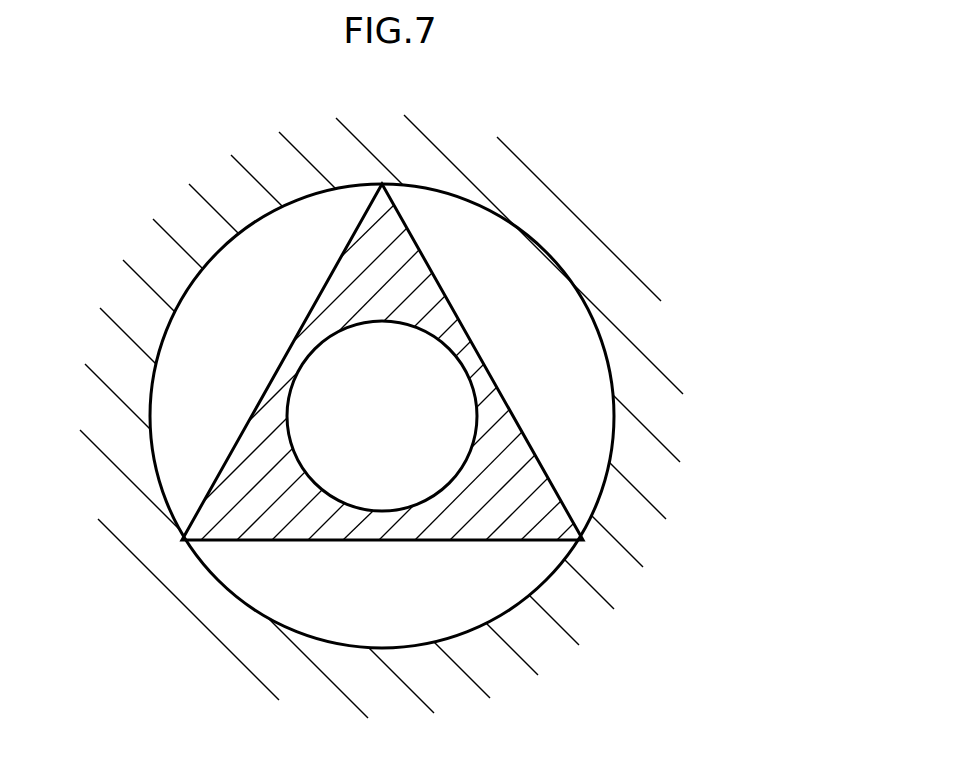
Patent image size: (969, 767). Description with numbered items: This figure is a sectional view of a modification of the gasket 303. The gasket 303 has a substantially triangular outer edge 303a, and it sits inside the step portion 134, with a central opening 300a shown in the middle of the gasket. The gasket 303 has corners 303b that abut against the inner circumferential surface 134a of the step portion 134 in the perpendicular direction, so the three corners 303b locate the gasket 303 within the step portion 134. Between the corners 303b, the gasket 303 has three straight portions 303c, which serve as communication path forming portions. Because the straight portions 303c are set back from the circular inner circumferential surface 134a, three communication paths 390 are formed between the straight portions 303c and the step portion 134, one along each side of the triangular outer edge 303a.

The step portion 134 is at (408, 148).
The inner circumferential surface 134a is at (578, 298).
The through hole 300a is at (350, 428).
The gasket 303 is at (446, 394).
The substantially triangular outer edge 303a is at (446, 394).
The corners 303b is at (375, 181).
The straight portions 303c is at (320, 282).
The communication paths 390 is at (204, 297).